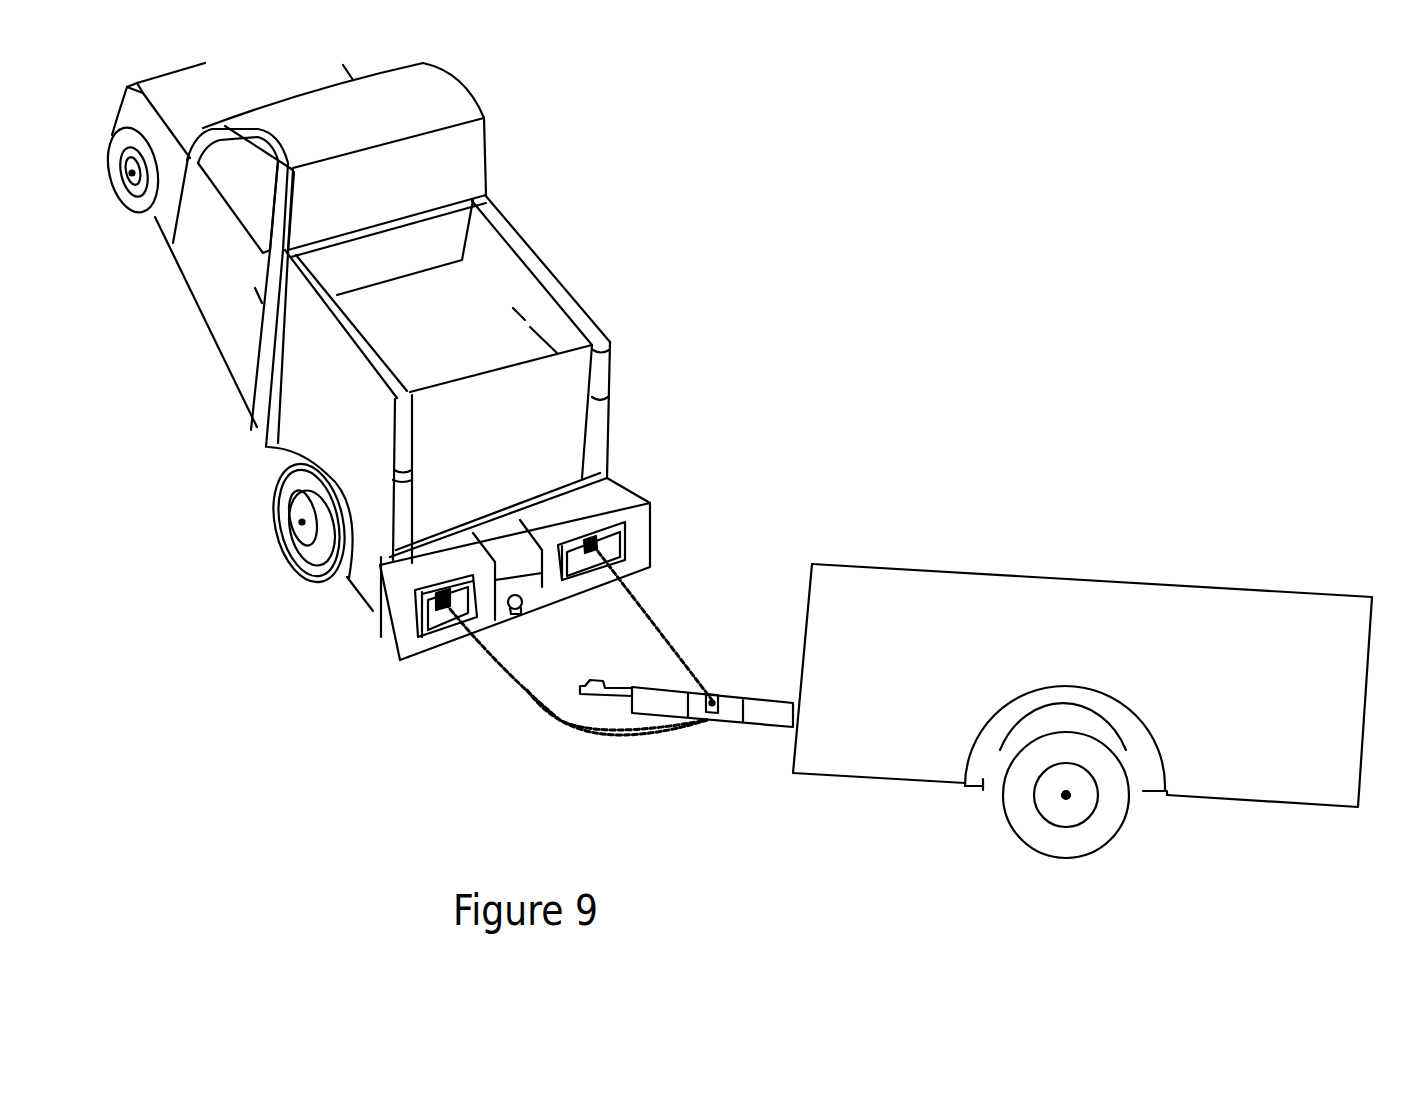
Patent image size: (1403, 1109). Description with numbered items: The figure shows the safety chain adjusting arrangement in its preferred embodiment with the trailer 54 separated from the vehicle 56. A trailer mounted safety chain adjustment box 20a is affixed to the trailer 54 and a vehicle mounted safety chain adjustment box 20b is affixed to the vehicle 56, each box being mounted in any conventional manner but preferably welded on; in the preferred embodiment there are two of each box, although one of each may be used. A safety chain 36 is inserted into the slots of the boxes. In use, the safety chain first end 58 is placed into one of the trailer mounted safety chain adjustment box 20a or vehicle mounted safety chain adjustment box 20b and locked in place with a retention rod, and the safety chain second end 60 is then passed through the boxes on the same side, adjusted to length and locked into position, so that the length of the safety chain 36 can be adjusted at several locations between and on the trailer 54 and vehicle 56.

The vehicle 56 is at (547, 417).
The vehicle mounted safety chain adjustment box 20b is at (607, 521).
The safety chain second end 60 is at (605, 544).
The safety chain first end 58 is at (440, 610).
The trailer 54 is at (760, 713).
The trailer mounted safety chain adjustment box 20a is at (713, 690).
The safety chain 36 is at (632, 745).